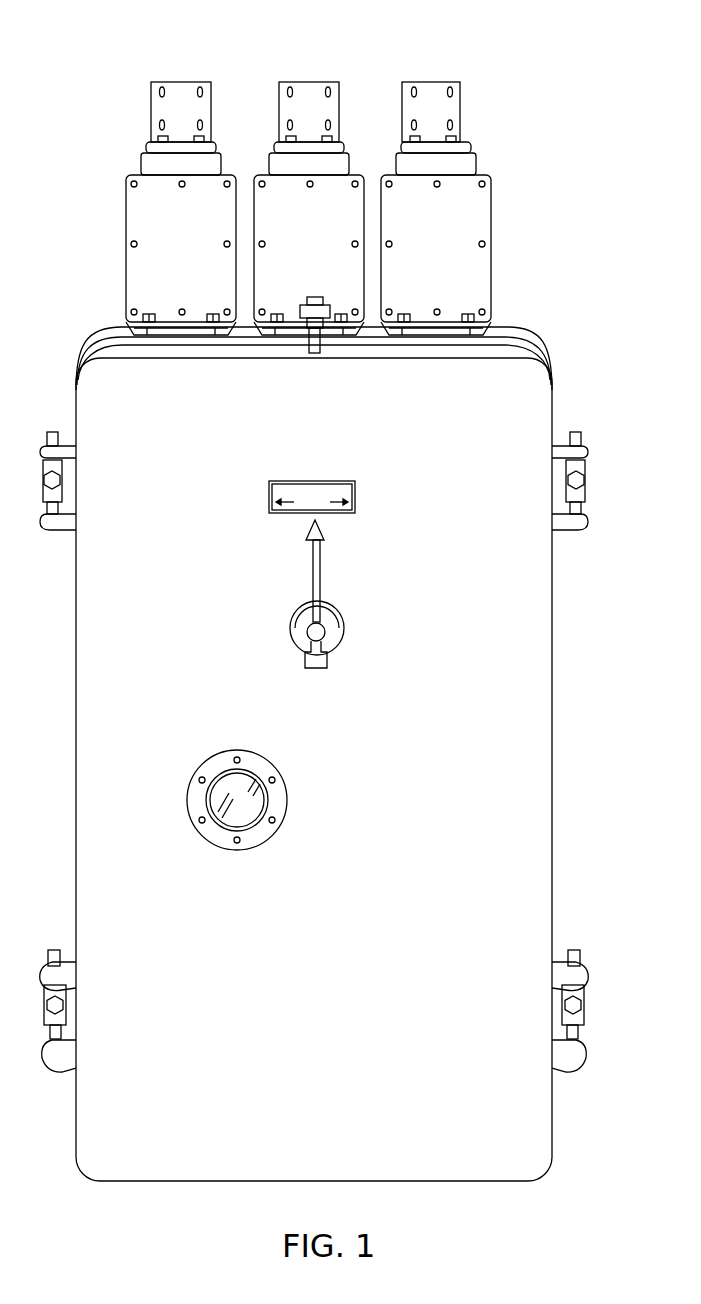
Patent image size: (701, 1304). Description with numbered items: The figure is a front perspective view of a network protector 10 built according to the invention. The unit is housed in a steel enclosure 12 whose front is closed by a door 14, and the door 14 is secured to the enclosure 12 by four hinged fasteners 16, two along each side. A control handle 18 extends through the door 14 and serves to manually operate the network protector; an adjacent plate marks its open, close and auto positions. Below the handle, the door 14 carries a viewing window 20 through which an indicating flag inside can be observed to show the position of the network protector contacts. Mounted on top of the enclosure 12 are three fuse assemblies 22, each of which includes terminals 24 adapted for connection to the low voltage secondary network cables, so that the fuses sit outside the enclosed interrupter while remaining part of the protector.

The network protector 10 is at (442, 21).
The steel enclosure 12 is at (500, 327).
The door 14 is at (534, 596).
The hinged fasteners 16 is at (52, 431).
The control handle 18 is at (321, 577).
The viewing window 20 is at (288, 793).
The fuse assemblies 22 is at (264, 156).
The terminals 24 is at (408, 81).